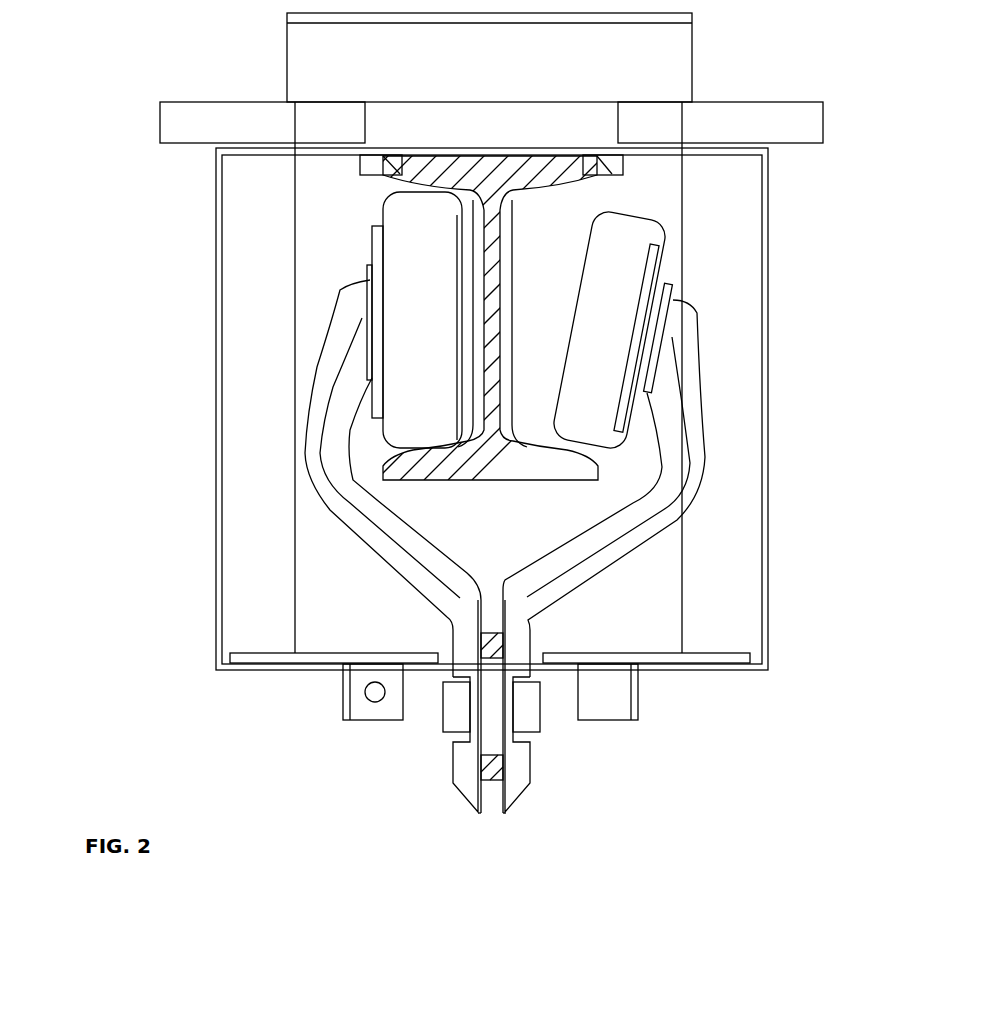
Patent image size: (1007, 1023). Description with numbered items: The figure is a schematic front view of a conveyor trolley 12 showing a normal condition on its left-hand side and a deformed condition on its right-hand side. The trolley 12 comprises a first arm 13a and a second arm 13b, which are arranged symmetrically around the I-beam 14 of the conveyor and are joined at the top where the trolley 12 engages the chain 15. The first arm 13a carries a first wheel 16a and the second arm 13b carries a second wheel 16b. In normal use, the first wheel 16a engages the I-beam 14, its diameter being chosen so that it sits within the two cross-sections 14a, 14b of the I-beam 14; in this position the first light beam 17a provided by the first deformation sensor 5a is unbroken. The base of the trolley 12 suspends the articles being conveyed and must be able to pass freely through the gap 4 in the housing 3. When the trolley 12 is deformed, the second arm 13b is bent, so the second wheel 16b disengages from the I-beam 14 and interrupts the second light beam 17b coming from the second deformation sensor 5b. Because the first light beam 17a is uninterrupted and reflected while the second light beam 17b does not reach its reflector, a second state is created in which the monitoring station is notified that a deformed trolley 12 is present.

The housing 3 is at (212, 652).
The gap 4 is at (413, 705).
The first deformation sensor 5a is at (198, 132).
The second deformation sensor 5b is at (780, 134).
The trolley 12 is at (282, 509).
The first arm 13a is at (365, 518).
The second arm 13b is at (657, 518).
The I-beam 14 is at (483, 175).
The cross-section of the I-beam 14a is at (425, 465).
The cross-section of the I-beam 14b is at (543, 460).
The chain 15 is at (533, 763).
The first wheel 16a is at (412, 332).
The second wheel 16b is at (647, 345).
The first light beam 17a is at (297, 270).
The second light beam 17b is at (682, 189).